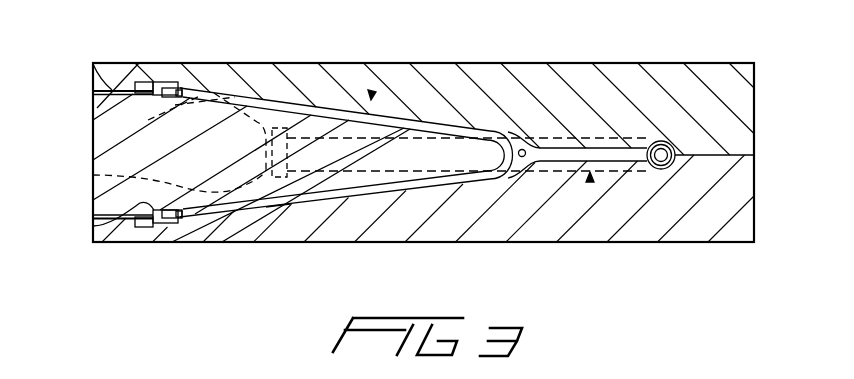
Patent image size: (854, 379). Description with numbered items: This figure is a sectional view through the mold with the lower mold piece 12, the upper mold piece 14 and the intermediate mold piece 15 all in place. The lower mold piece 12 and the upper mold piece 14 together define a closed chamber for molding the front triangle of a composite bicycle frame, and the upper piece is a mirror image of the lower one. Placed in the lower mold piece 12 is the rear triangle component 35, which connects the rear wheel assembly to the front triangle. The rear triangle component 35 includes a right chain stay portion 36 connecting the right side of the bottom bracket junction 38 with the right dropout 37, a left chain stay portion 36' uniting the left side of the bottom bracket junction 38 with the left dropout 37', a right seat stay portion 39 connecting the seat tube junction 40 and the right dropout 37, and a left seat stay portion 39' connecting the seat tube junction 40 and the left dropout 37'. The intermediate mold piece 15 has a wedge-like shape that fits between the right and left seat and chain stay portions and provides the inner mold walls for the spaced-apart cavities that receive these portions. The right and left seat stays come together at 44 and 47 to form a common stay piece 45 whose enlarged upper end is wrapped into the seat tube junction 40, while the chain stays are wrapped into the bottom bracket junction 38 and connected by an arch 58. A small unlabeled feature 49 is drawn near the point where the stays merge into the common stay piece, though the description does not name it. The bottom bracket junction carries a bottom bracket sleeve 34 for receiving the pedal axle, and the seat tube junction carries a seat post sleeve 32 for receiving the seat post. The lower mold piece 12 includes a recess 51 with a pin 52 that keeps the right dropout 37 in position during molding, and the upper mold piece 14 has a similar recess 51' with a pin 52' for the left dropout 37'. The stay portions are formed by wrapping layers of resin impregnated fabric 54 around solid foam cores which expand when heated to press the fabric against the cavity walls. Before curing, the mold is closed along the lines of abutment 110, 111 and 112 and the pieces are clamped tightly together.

The lower mold piece 12 is at (495, 230).
The upper mold piece 14 is at (693, 63).
The intermediate mold piece 15 is at (102, 135).
The seat post sleeve 32 is at (665, 170).
The bottom bracket sleeve 34 is at (275, 65).
The rear triangle component 35 is at (373, 94).
The right chain stay portion 36 is at (158, 179).
The left chain stay portion 36' is at (174, 114).
The right dropout 37 is at (101, 229).
The left dropout 37' is at (97, 97).
The bottom bracket junction 38 is at (270, 126).
The right seat stay portion 39 is at (335, 229).
The left seat stay portion 39' is at (335, 76).
The seat tube junction 40 is at (590, 180).
The seat stay joining point 44 is at (485, 155).
The common stay piece 45 is at (590, 150).
The seat stay joining point 47 is at (535, 147).
The orifice 49 is at (521, 149).
The recess 51 is at (127, 252).
The recess 51' is at (143, 53).
The pin 52 is at (164, 248).
The pin 52' is at (175, 55).
The resin impregnated fabric 54 is at (266, 207).
The arch 58 is at (263, 147).
The line of abutment 110 is at (737, 157).
The line of abutment 111 is at (93, 64).
The line of abutment 112 is at (93, 226).